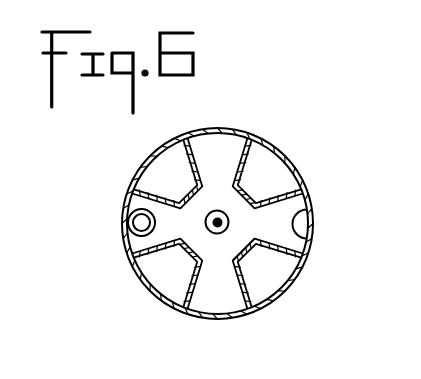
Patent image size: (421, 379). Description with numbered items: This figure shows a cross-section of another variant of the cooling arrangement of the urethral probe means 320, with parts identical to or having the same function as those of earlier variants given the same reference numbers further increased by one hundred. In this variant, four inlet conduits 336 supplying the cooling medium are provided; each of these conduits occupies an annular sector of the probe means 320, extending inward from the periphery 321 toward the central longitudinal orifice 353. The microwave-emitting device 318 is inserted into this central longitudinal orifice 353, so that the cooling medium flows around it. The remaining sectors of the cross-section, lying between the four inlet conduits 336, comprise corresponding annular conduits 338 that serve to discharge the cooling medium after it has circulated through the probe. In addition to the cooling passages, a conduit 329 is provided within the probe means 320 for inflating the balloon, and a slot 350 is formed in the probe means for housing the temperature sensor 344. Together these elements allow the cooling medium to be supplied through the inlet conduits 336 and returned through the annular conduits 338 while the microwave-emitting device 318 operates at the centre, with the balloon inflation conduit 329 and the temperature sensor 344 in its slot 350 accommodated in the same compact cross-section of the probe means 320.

The microwave-emitting device 318 is at (219, 221).
The probe means 320 is at (183, 315).
The periphery 321 is at (146, 162).
The conduit for inflating the balloon 329 is at (138, 227).
The inlet conduits 336 is at (158, 170).
The annular conduits for discharging the cooling medium 338 is at (228, 151).
The temperature sensor 344 is at (302, 220).
The slot 350 is at (308, 232).
The central longitudinal orifice 353 is at (234, 244).